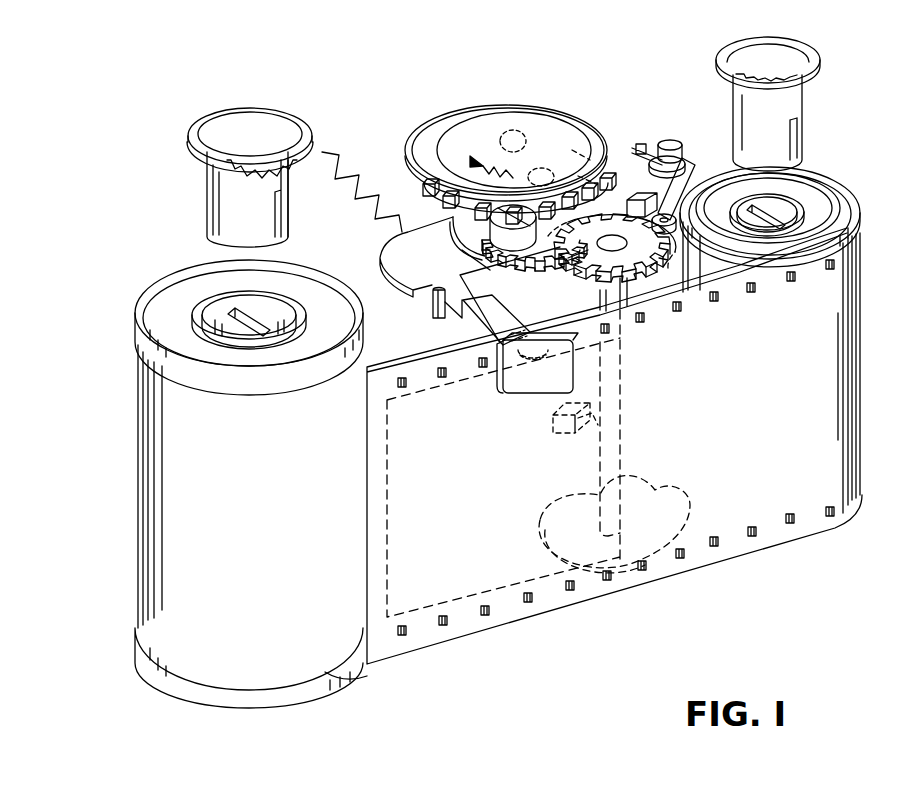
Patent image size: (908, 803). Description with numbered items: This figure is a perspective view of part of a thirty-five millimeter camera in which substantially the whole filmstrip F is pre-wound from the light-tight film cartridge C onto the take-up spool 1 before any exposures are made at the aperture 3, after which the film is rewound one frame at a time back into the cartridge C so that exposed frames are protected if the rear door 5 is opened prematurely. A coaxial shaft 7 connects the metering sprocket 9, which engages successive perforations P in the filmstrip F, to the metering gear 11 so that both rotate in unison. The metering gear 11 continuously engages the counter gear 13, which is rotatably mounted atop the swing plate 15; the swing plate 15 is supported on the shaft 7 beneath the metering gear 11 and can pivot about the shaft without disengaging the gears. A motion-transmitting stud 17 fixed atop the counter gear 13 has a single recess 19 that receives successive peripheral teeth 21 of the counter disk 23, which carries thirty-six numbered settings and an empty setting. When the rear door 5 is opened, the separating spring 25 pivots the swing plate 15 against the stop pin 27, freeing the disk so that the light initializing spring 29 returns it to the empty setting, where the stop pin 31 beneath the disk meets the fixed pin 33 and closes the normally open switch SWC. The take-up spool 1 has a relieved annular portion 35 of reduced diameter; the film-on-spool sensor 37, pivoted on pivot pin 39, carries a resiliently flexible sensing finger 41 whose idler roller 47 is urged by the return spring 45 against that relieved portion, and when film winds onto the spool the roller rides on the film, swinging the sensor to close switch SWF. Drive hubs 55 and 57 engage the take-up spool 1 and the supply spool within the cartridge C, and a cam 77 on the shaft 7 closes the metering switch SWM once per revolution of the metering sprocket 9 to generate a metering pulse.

The take-up spool 1 is at (793, 193).
The aperture 3 is at (508, 578).
The rear door 5 is at (522, 380).
The coaxial shaft 7 is at (590, 280).
The metering sprocket 9 is at (655, 487).
The metering gear 11 is at (568, 260).
The counter gear 13 is at (508, 262).
The swing plate 15 is at (397, 265).
The motion-transmitting stud 17 is at (490, 221).
The recess 19 is at (512, 208).
The peripheral teeth 21 is at (420, 192).
The counter disk 23 is at (453, 140).
The separating spring 25 is at (358, 185).
The stop pin 27 is at (432, 316).
The initializing spring 29 is at (470, 160).
The stop pin 31 is at (490, 113).
The fixed pin 33 is at (560, 186).
The relieved annular portion 35 is at (816, 192).
The film-on-spool sensor 37 is at (690, 168).
The pivot pin 39 is at (680, 141).
The sensing finger 41 is at (695, 176).
The return spring 45 is at (650, 143).
The idler roller 47 is at (668, 233).
The drive hub 55 is at (810, 66).
The drive hub 57 is at (222, 140).
The cam 77 is at (592, 437).
The film cartridge C is at (137, 388).
The filmstrip F is at (765, 513).
The perforations P is at (640, 568).
The switch SWC is at (577, 188).
The switch SWF is at (586, 190).
The switch SWM is at (553, 430).